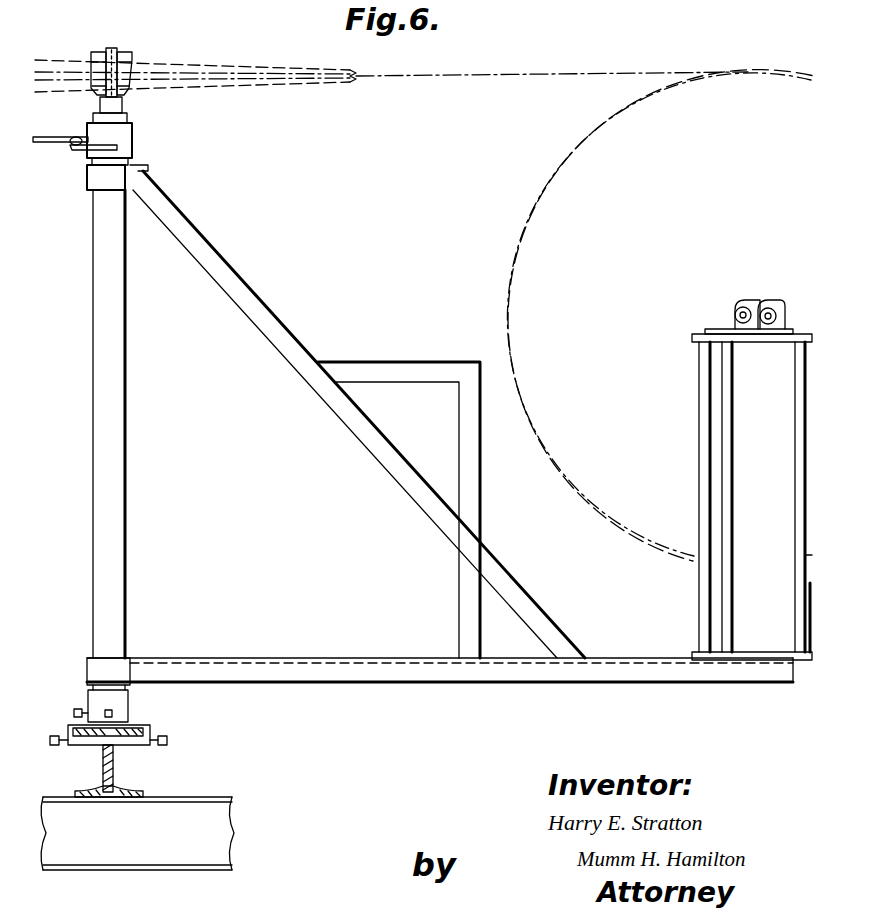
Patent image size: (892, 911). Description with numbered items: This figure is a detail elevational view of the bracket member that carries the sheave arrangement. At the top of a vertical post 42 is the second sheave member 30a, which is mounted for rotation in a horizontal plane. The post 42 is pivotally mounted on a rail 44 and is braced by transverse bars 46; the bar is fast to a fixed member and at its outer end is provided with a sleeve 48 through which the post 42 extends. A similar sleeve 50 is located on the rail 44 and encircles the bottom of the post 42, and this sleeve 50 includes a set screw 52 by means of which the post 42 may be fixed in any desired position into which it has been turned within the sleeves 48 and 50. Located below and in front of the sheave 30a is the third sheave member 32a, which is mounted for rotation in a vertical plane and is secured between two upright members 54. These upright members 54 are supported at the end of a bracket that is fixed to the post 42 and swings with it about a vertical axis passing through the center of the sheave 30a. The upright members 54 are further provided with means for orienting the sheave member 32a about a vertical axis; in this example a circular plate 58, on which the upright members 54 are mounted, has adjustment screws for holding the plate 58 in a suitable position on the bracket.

The second sheave member 30a is at (294, 66).
The third sheave member 32a is at (522, 249).
The vertical post 42 is at (115, 64).
The rail 44 is at (113, 768).
The transverse bars 46 is at (53, 143).
The sleeve 48 is at (123, 137).
The sleeve 50 is at (123, 702).
The set screw 52 is at (74, 712).
The upright members 54 is at (727, 445).
The circular plate 58 is at (706, 659).